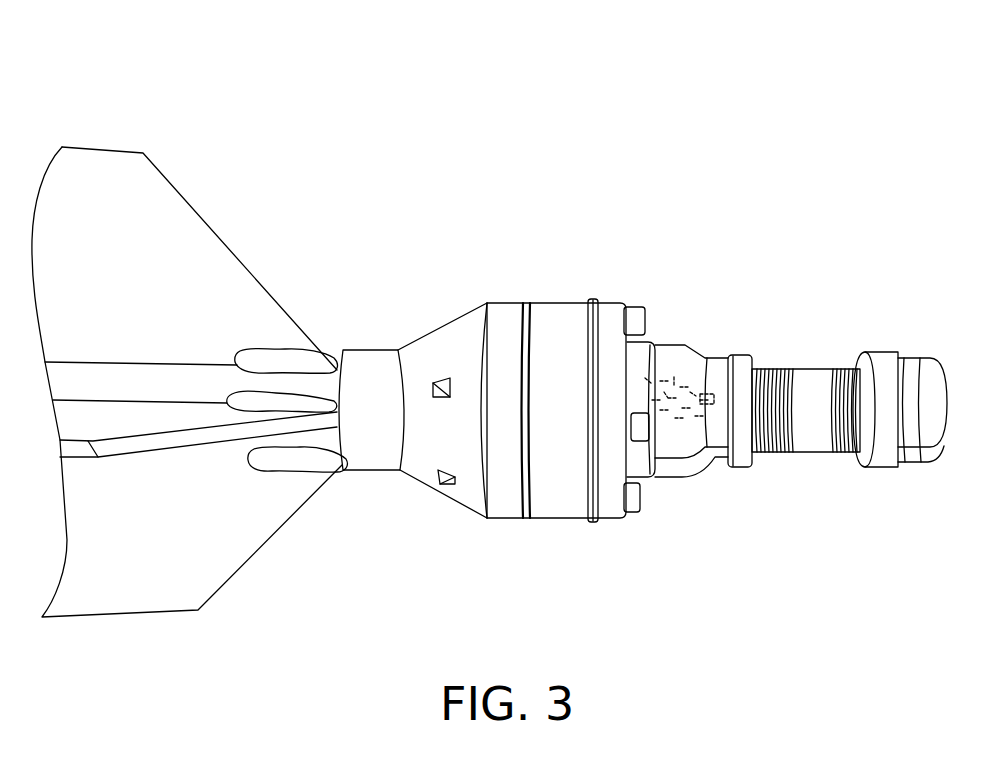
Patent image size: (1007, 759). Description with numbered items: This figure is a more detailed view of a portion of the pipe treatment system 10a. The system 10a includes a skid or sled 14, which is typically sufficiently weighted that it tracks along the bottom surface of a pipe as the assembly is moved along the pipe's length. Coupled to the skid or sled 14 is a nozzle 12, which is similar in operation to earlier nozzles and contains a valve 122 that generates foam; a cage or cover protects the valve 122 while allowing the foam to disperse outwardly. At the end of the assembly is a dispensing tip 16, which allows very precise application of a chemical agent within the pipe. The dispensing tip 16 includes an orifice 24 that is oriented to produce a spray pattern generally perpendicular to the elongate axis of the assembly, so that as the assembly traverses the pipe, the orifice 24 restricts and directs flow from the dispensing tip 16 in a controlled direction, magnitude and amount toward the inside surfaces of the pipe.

The system 10a is at (708, 90).
The skid or sled 14 is at (228, 280).
The nozzle 12 is at (553, 317).
The valve 122 is at (668, 387).
The orifice 24 is at (912, 348).
The dispensing tip 16 is at (910, 462).